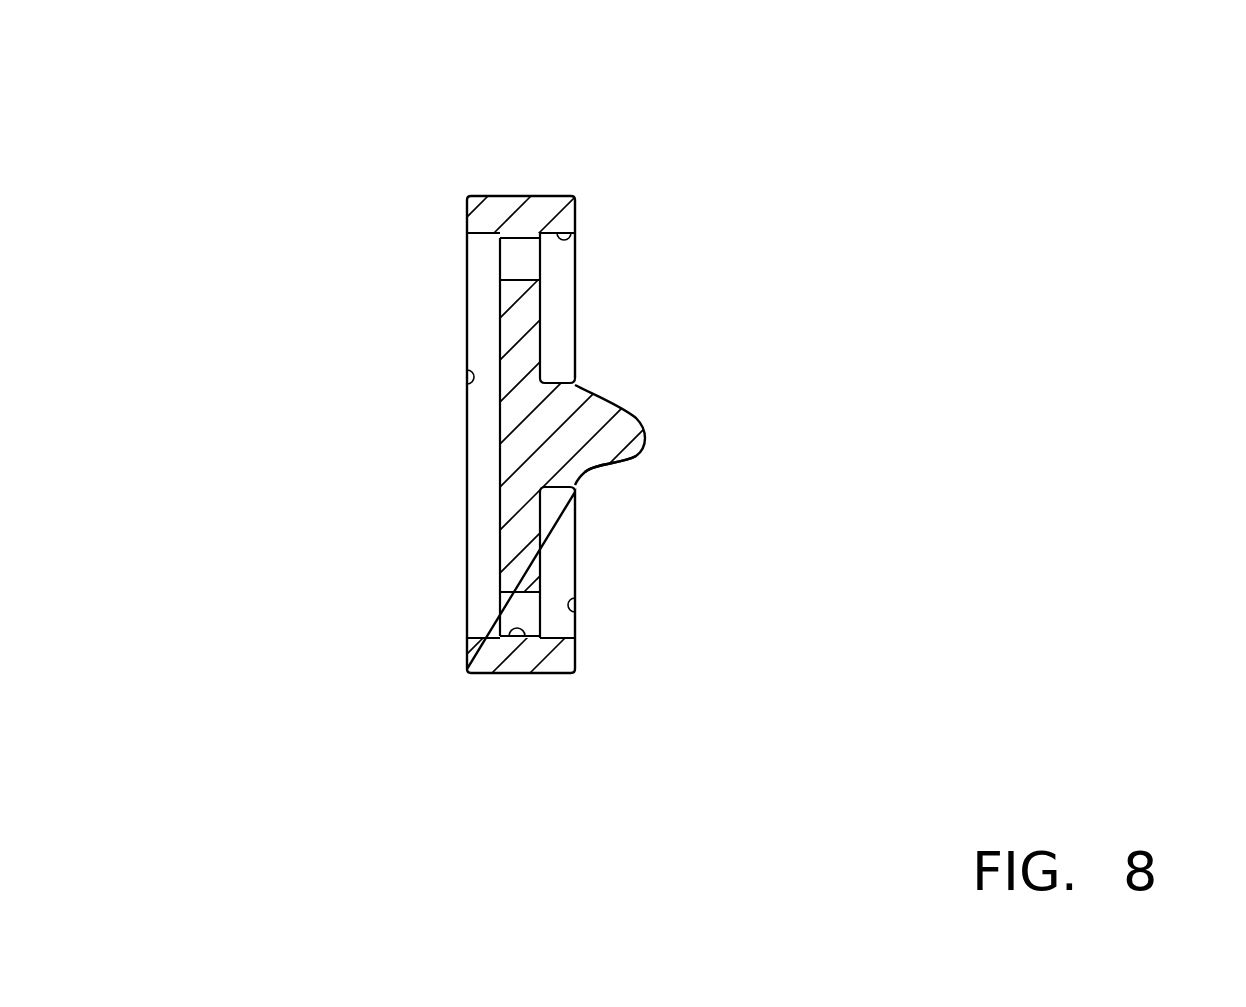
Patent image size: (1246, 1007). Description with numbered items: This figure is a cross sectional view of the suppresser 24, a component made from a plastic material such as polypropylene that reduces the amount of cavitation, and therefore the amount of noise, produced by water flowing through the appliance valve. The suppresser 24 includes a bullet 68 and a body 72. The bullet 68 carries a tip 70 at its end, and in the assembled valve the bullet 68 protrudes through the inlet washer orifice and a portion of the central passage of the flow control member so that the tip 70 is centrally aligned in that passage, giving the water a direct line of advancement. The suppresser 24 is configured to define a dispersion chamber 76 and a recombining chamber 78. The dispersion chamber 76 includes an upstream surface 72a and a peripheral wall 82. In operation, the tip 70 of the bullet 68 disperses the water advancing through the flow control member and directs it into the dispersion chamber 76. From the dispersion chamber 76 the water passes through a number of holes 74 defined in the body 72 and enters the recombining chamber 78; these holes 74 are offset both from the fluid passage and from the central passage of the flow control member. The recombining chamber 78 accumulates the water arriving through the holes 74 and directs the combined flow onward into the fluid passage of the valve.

The suppresser 24 is at (895, 175).
The bullet 68 is at (565, 453).
The tip 70 is at (647, 438).
The body 72 is at (513, 533).
The upstream surface 72a is at (540, 313).
The holes 74 is at (508, 637).
The dispersion chamber 76 is at (578, 612).
The recombining chamber 78 is at (467, 390).
The peripheral wall 82 is at (574, 238).